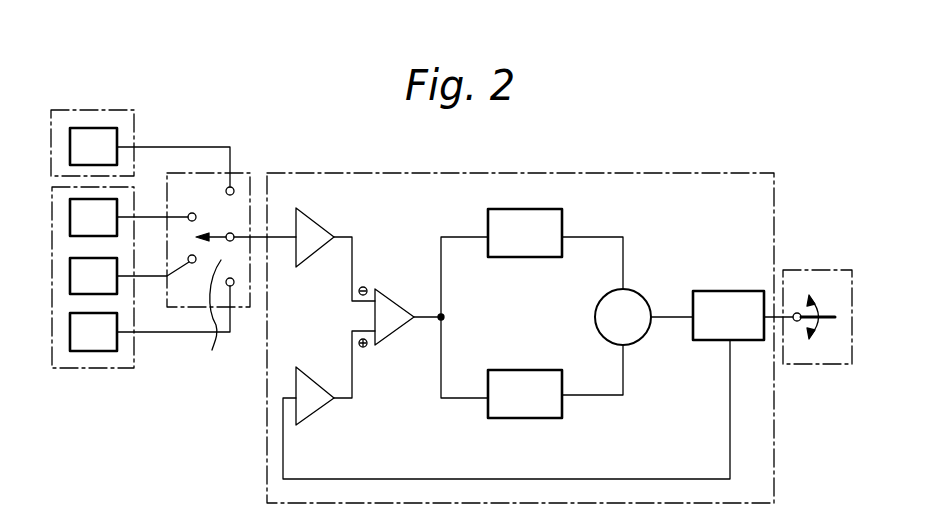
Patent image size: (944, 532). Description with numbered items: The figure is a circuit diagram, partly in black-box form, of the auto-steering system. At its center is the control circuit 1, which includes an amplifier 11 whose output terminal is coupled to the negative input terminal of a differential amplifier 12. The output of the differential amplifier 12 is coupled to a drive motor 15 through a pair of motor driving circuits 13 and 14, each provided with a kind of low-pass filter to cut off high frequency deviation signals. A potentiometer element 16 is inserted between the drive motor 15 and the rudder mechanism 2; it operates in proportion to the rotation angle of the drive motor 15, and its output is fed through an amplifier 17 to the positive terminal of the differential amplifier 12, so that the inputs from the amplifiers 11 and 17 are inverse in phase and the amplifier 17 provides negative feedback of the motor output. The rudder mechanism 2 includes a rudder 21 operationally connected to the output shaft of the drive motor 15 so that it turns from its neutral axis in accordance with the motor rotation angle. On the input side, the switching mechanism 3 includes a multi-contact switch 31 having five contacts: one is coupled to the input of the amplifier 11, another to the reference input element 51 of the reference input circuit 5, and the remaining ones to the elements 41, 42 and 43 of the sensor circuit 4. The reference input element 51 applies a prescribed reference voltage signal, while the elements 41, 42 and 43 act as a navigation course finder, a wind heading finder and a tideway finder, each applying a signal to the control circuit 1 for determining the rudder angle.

The control circuit 1 is at (512, 173).
The rudder mechanism 2 is at (793, 270).
The switching mechanism 3 is at (190, 173).
The sensor circuit 4 is at (115, 372).
The reference input circuit 5 is at (137, 99).
The reference input element 51 is at (150, 157).
The navigation course finder 41 is at (129, 217).
The wind heading finder 42 is at (129, 276).
The tideway finder 43 is at (150, 318).
The multi-contact switch 31 is at (209, 320).
The amplifier 11 is at (322, 208).
The differential amplifier 12 is at (447, 288).
The motor driving circuit 13 is at (572, 147).
The motor driving circuit 14 is at (570, 435).
The drive motor 15 is at (640, 362).
The potentiometer element 16 is at (685, 225).
The amplifier 17 is at (313, 440).
The rudder 21 is at (831, 321).